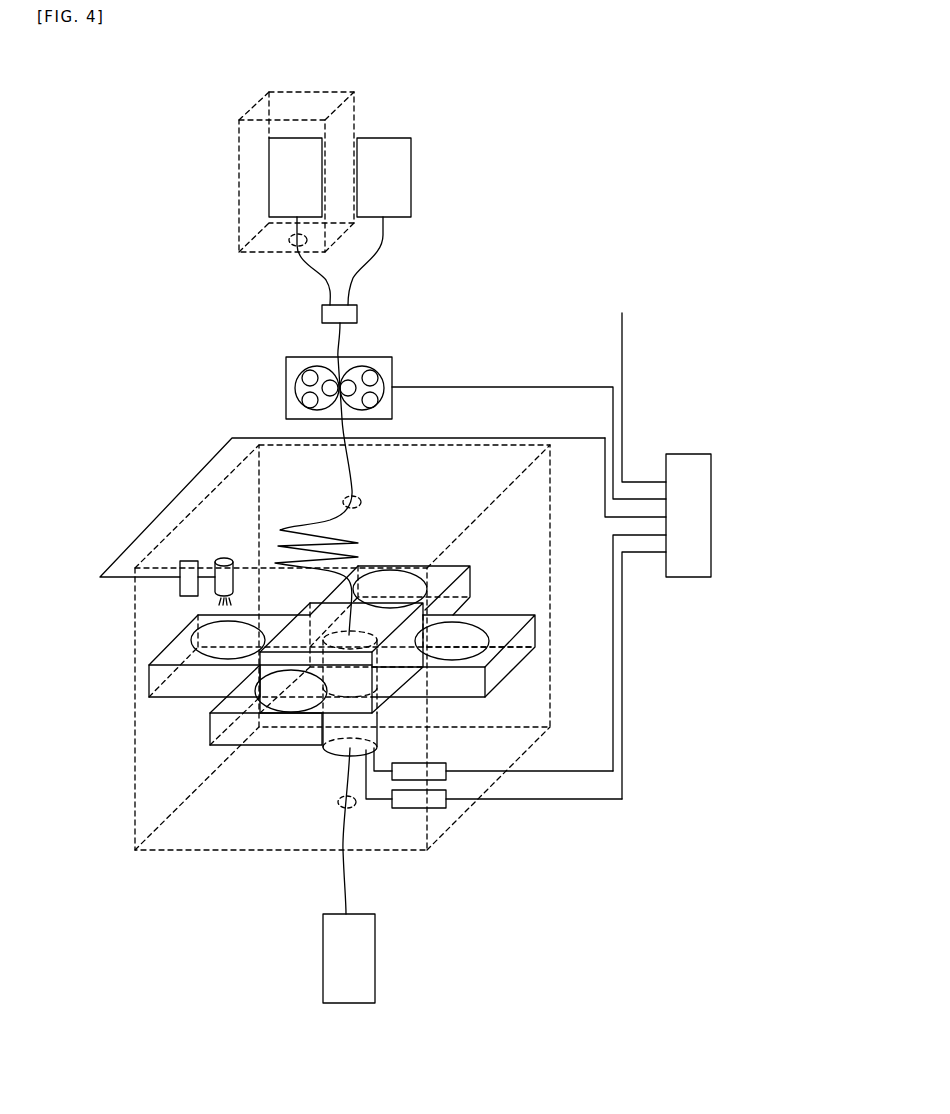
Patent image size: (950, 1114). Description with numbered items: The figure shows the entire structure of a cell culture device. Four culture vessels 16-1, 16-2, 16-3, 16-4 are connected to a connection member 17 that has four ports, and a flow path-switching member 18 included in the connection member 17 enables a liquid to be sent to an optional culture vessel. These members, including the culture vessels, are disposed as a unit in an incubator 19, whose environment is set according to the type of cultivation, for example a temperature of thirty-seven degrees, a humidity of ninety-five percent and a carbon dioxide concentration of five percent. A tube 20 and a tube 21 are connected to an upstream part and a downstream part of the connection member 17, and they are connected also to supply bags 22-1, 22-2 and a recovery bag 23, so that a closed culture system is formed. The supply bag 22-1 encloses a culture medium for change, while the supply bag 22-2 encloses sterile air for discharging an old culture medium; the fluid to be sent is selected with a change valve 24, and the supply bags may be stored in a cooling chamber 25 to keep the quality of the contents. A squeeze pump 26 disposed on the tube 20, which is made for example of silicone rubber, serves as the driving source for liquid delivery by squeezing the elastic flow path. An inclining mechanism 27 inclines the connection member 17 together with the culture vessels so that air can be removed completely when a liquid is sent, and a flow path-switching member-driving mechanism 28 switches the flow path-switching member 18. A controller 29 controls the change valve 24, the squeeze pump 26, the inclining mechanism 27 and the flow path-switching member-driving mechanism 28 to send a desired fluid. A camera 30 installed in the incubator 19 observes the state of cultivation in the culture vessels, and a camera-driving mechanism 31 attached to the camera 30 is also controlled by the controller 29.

The culture vessel 16-1 is at (175, 662).
The culture vessel 16-2 is at (240, 707).
The culture vessel 16-3 is at (502, 625).
The culture vessel 16-4 is at (437, 580).
The connection member 17 is at (282, 630).
The flow path-switching member 18 is at (347, 650).
The incubator 19 is at (280, 473).
The tube 20 is at (338, 348).
The tube 21 is at (345, 865).
The supply bag 22-1 is at (268, 172).
The supply bag 22-2 is at (412, 170).
The recovery bag 23 is at (376, 948).
The change valve 24 is at (320, 312).
The cooling chamber 25 is at (283, 108).
The squeeze pump 26 is at (286, 388).
The inclining mechanism 27 is at (447, 782).
The flow path-switching member-driving mechanism 28 is at (433, 809).
The controller 29 is at (688, 578).
The camera 30 is at (212, 567).
The camera-driving mechanism 31 is at (172, 563).